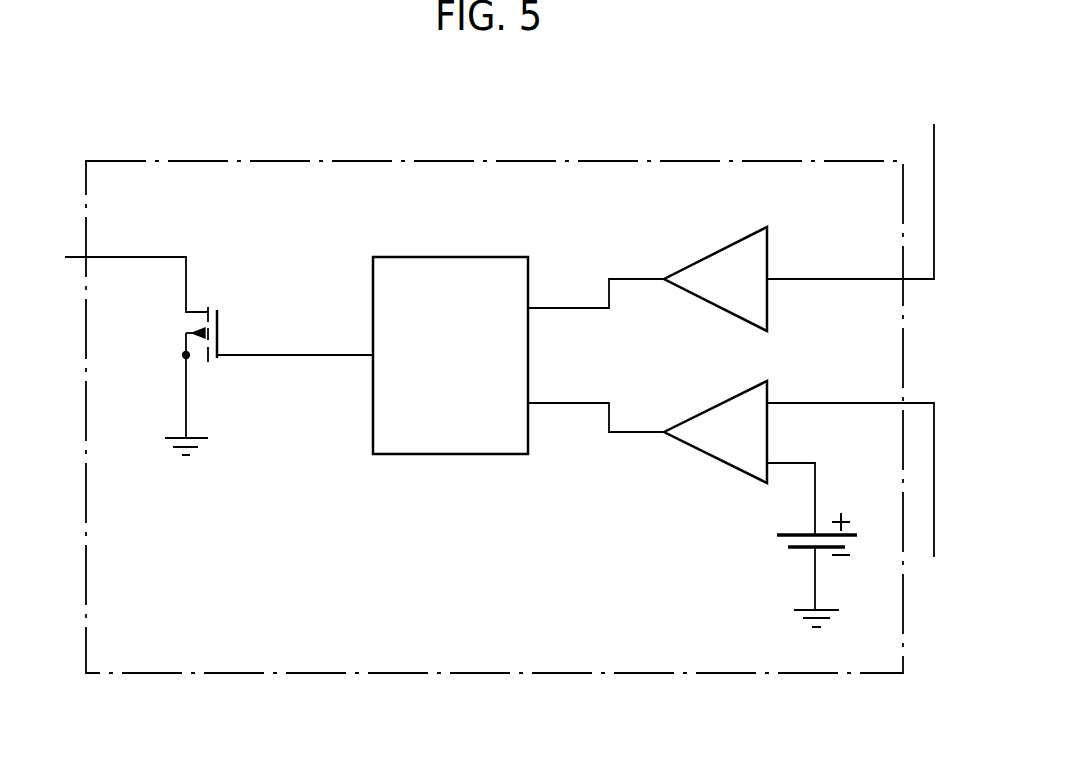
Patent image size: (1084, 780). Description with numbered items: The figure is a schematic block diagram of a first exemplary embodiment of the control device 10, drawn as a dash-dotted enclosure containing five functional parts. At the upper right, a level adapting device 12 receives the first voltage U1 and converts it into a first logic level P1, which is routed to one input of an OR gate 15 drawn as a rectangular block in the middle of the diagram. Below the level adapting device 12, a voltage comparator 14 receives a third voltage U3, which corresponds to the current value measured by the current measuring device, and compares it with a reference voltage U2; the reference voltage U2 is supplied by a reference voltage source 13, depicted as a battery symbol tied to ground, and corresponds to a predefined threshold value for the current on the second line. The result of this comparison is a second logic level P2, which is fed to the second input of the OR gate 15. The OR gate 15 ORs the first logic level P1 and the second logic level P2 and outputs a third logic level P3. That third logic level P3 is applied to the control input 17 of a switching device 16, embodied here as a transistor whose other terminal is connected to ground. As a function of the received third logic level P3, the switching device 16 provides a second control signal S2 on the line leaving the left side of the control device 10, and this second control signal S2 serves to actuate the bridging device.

The control device 10 is at (365, 161).
The level adapting device 12 is at (718, 250).
The reference voltage source 13 is at (800, 548).
The voltage comparator 14 is at (717, 458).
The OR gate 15 is at (450, 257).
The switching device 16 is at (172, 338).
The control input 17 is at (220, 338).
The first logic level P1 is at (576, 306).
The second logic level P2 is at (572, 403).
The third logic level P3 is at (310, 357).
The second control signal S2 is at (186, 280).
The first voltage U1 is at (932, 143).
The reference voltage U2 is at (818, 478).
The third voltage U3 is at (840, 402).